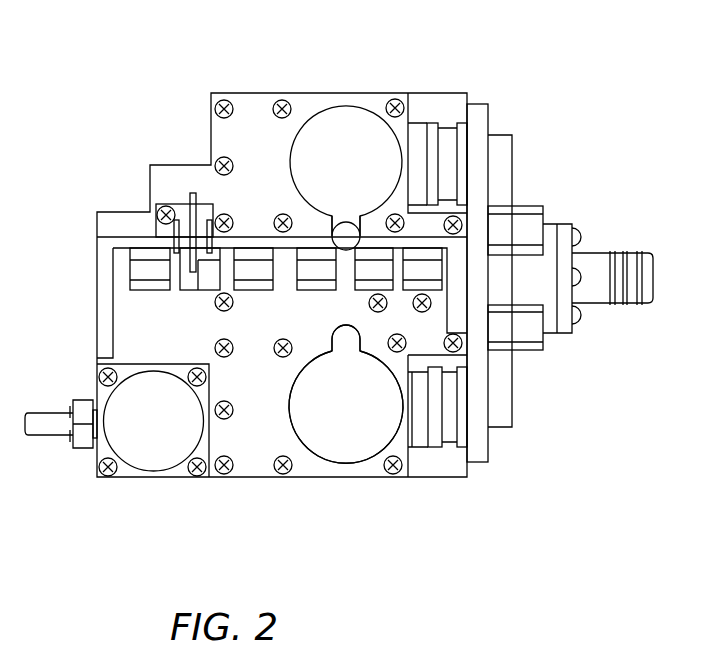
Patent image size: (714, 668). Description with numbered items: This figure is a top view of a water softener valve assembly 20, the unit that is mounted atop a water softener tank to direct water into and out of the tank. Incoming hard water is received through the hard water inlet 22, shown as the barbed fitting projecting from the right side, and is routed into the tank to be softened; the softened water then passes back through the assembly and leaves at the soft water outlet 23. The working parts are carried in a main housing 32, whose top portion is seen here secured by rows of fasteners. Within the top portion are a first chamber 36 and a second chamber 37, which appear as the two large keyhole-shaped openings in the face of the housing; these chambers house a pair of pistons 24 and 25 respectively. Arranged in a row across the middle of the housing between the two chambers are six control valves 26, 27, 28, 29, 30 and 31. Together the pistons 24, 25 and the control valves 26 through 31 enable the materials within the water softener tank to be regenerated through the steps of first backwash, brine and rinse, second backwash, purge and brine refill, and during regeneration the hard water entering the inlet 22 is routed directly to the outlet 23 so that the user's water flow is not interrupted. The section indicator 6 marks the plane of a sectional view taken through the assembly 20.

The section line 6- 6 is at (314, 33).
The water softener valve assembly 20 is at (534, 494).
The hard water inlet 22 is at (452, 168).
The soft water outlet 23 is at (450, 390).
The piston 24 is at (360, 447).
The piston 25 is at (368, 137).
The control valve 26 is at (142, 272).
The control valve 27 is at (192, 285).
The control valve 28 is at (257, 285).
The control valve 29 is at (312, 285).
The control valve 30 is at (360, 285).
The control valve 31 is at (433, 270).
The main housing 32 is at (330, 455).
The first chamber 36 is at (340, 127).
The second chamber 37 is at (345, 450).